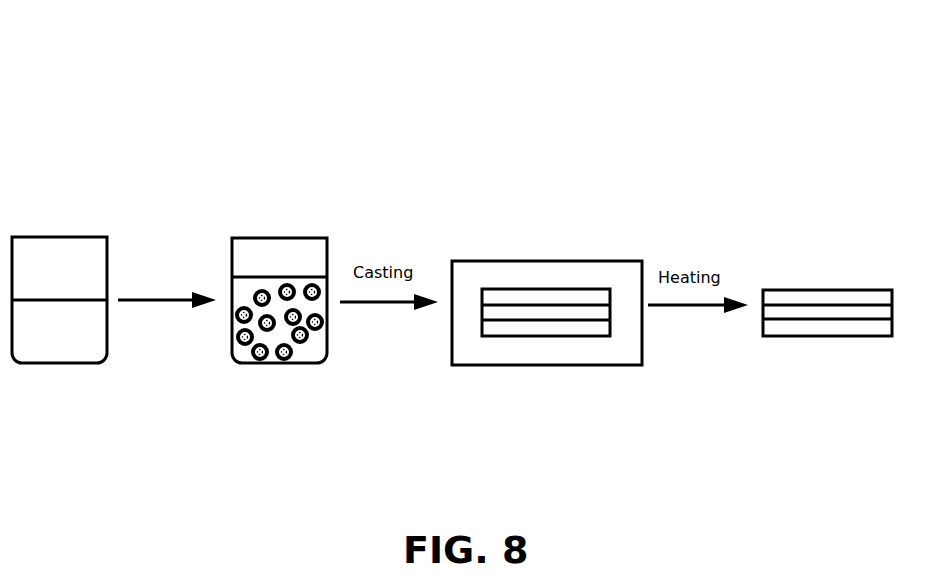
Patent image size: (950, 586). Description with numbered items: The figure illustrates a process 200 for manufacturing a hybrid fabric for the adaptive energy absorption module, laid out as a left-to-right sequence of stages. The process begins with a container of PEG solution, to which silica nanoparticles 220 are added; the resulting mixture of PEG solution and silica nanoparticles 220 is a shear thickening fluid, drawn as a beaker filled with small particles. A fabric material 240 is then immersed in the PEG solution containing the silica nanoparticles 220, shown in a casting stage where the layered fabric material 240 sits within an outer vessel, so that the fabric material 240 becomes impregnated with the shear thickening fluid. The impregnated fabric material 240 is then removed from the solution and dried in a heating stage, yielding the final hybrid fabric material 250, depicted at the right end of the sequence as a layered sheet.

The process 200 is at (68, 108).
The silica nanoparticles 220 is at (279, 353).
The fabric material 240 is at (554, 341).
The hybrid fabric material 250 is at (870, 337).